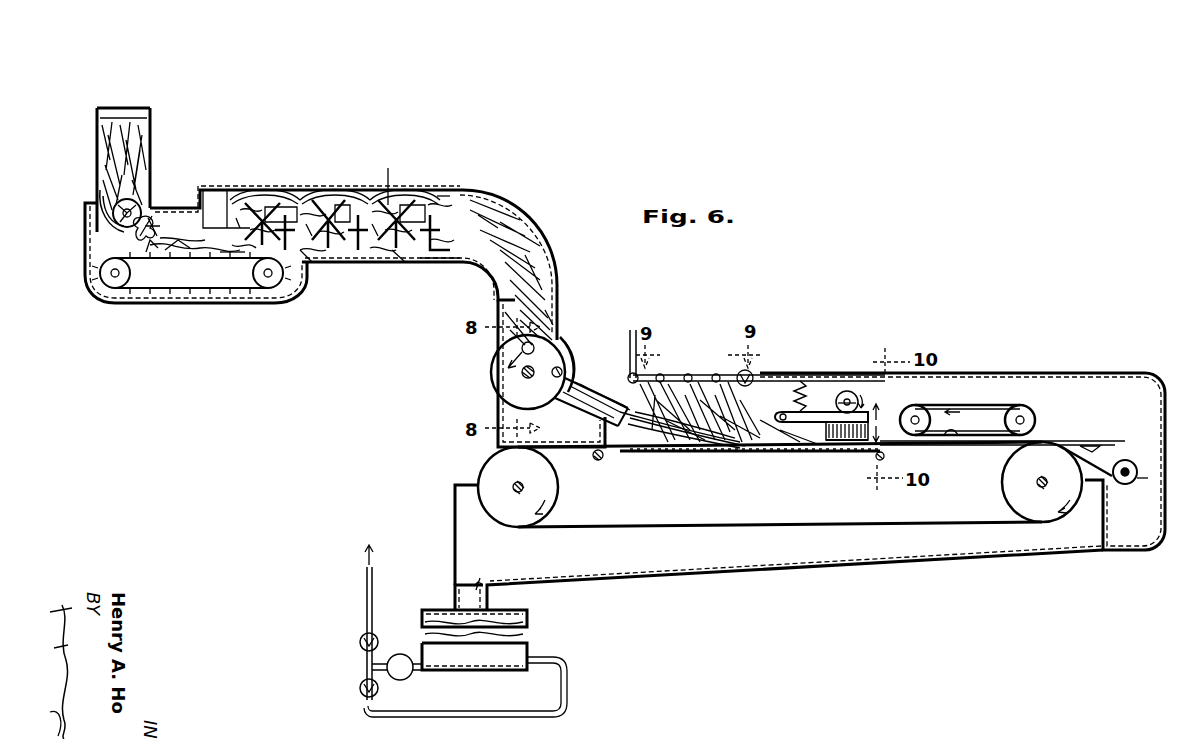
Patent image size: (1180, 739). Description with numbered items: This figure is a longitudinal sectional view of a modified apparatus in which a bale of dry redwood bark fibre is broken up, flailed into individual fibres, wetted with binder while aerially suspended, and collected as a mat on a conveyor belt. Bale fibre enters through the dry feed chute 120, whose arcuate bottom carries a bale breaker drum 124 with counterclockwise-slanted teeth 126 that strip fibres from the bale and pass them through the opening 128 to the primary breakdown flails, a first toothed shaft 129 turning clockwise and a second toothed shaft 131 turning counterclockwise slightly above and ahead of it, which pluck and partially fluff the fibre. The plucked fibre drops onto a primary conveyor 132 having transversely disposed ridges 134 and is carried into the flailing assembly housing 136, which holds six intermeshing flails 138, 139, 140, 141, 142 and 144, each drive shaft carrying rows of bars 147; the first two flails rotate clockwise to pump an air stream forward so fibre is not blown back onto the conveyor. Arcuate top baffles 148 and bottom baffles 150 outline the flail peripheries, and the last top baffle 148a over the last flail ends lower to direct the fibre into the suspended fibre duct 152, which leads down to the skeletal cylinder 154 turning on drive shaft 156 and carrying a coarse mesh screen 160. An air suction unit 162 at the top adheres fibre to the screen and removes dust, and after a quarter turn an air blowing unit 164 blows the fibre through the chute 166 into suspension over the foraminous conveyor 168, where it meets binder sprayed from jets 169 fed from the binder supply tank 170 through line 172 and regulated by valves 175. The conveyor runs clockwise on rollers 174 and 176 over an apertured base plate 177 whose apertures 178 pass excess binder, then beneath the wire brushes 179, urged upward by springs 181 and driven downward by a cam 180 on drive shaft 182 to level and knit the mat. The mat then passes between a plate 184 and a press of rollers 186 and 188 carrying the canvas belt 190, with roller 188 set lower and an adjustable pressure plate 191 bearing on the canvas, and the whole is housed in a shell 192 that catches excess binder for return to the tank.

The dry feed chute 120 is at (99, 138).
The bale breaker drum 124 is at (104, 190).
The teeth 126 is at (113, 210).
The opening 128 is at (120, 230).
The first toothed shaft 129 is at (148, 250).
The second toothed shaft 131 is at (172, 244).
The primary conveyor 132 is at (212, 262).
The transversely disposed ridges 134 is at (248, 296).
The flailing assembly housing 136 is at (380, 265).
The first flail 138 is at (190, 228).
The second flail 139 is at (300, 244).
The third flail 140 is at (384, 175).
The fourth flail 141 is at (404, 200).
The fifth flail 142 is at (400, 262).
The last flail 144 is at (466, 195).
The bars 147 is at (262, 205).
The arcuate top baffles 148 is at (391, 175).
The last top baffle 148a is at (438, 196).
The arcuate bottom baffles 150 is at (415, 264).
The suspended fibre duct 152 is at (542, 254).
The skeletal cylinder 154 is at (556, 348).
The drive shaft 156 is at (522, 375).
The coarse mesh screen 160 is at (506, 398).
The air suction unit 162 is at (521, 349).
The air blowing unit 164 is at (562, 368).
The chute 166 is at (588, 405).
The foraminous conveyor 168 is at (577, 450).
The jets 169 is at (658, 378).
The binder supply tank 170 is at (530, 650).
The line 172 is at (629, 345).
The roller 174 is at (509, 510).
The valves 175 is at (360, 684).
The roller 176 is at (1020, 489).
The base plate 177 is at (832, 445).
The apertures 178 is at (806, 454).
The wire brushes 179 is at (818, 410).
The cam 180 is at (846, 391).
The springs 181 is at (800, 380).
The drive shaft 182 is at (857, 392).
The plate 184 is at (964, 448).
The press roller 186 is at (913, 410).
The press roller 188 is at (1018, 410).
The canvas belt 190 is at (975, 406).
The adjustable pressure plate 191 is at (950, 437).
The shell 192 is at (1002, 560).